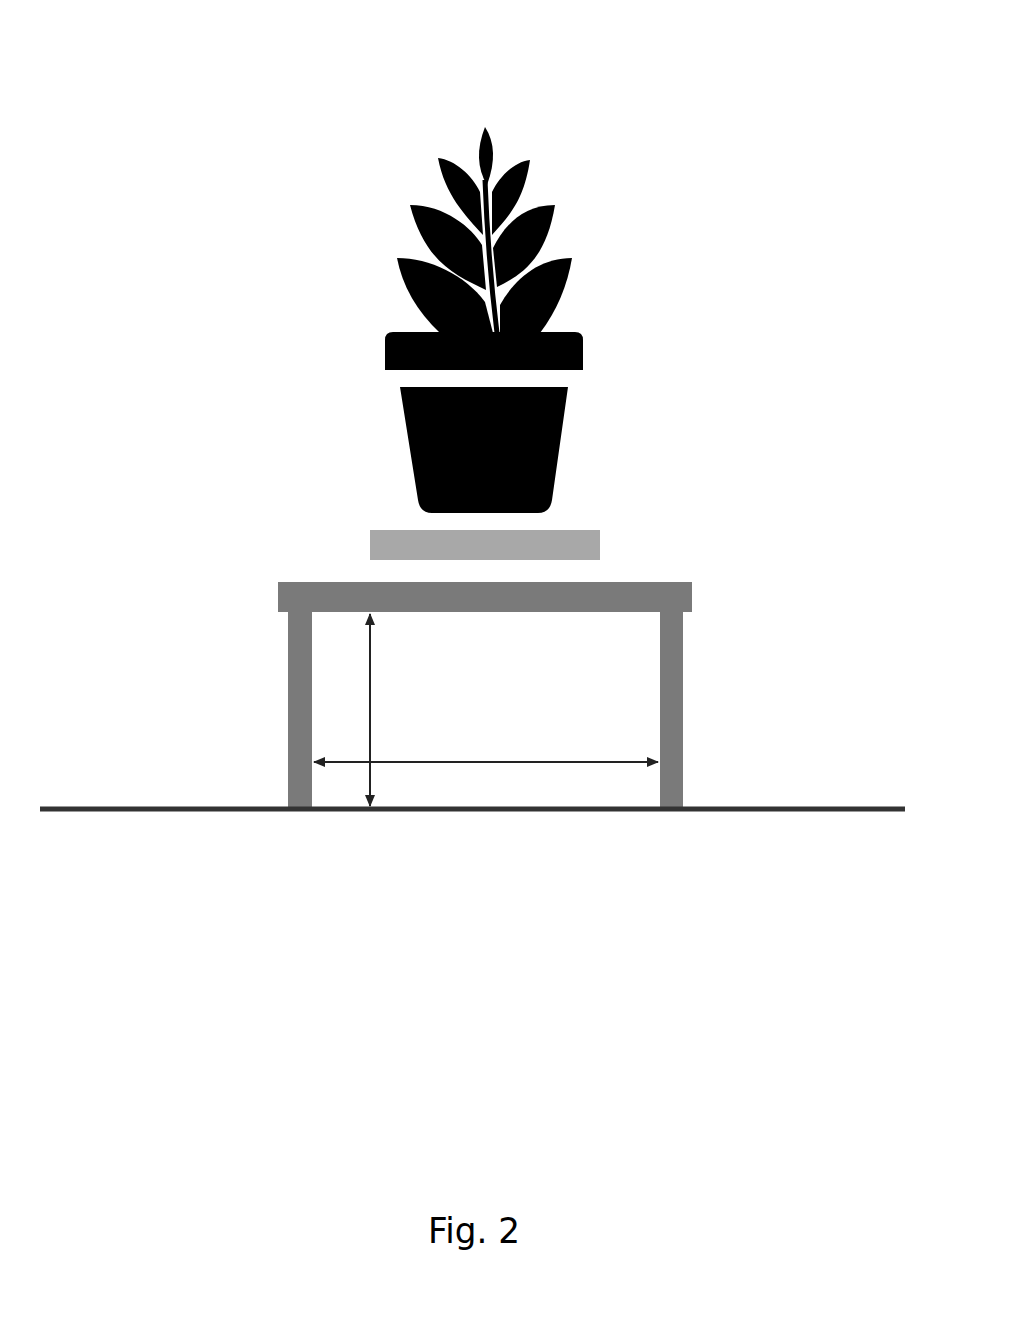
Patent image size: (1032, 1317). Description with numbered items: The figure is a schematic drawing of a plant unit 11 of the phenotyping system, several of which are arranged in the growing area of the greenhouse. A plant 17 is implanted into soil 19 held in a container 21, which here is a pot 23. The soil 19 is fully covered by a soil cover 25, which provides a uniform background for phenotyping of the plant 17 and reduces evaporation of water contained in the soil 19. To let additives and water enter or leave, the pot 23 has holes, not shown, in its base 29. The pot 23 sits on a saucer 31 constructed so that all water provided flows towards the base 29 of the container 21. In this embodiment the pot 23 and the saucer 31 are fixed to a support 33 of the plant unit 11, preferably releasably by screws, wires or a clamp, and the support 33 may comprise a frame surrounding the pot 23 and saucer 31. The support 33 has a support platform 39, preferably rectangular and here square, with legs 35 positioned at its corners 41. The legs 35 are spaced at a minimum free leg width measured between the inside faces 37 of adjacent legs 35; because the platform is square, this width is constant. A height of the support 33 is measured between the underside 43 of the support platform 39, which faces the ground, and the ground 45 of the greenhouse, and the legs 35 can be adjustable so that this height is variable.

The plant unit 11 is at (205, 140).
The plant 17 is at (562, 175).
The soil 19 is at (540, 420).
The container 21 is at (370, 470).
The pot 23 is at (364, 470).
The soil cover 25 is at (385, 330).
The base 29 is at (408, 503).
The saucer 31 is at (580, 528).
The support 33 is at (208, 632).
The legs 35 is at (290, 715).
The inside faces 37 is at (657, 723).
The support platform 39 is at (600, 582).
The corners 41 is at (292, 597).
The underside 43 is at (560, 620).
The ground 45 is at (637, 828).